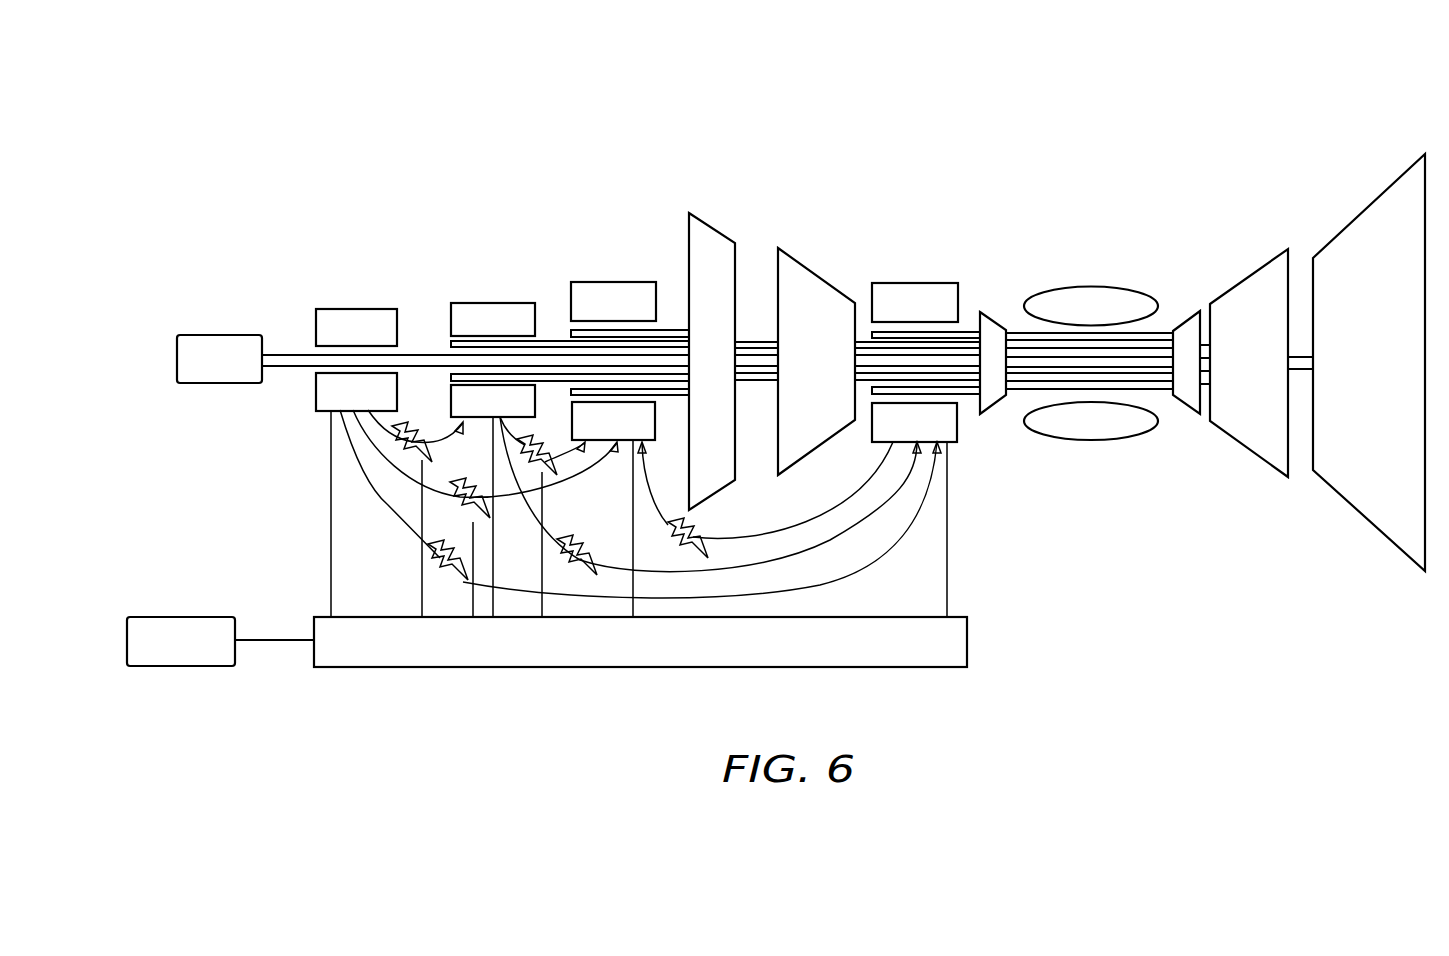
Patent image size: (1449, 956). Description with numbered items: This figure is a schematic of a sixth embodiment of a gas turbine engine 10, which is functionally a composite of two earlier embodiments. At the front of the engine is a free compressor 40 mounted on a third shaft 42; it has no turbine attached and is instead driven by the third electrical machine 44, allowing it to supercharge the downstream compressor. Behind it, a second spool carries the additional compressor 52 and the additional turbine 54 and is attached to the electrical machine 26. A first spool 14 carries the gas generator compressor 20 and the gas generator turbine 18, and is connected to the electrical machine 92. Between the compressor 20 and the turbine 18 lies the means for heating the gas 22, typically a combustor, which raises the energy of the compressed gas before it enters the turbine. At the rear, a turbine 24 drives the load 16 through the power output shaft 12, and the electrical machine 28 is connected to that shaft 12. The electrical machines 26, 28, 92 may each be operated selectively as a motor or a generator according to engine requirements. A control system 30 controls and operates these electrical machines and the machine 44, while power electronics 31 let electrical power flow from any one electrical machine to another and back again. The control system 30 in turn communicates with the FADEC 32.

The gas turbine engine 10 is at (1002, 119).
The shaft 12 is at (287, 352).
The first spool 14 is at (1166, 330).
The load 16 is at (214, 335).
The gas generator turbine 18 is at (1192, 311).
The gas generator compressor 20 is at (985, 312).
The means for heating the gas 22 is at (1089, 286).
The turbine 24 is at (1352, 217).
The electrical machine 26 is at (493, 303).
The electrical machine 28 is at (362, 309).
The control system 30 is at (968, 640).
The power electronics 31 is at (440, 540).
The FADEC 32 is at (181, 617).
The free compressor 40 is at (720, 232).
The third shaft 42 is at (668, 396).
The third electrical machine 44 is at (602, 282).
The additional compressor 52 is at (822, 278).
The additional turbine 54 is at (1262, 262).
The electrical machine 92 is at (904, 283).